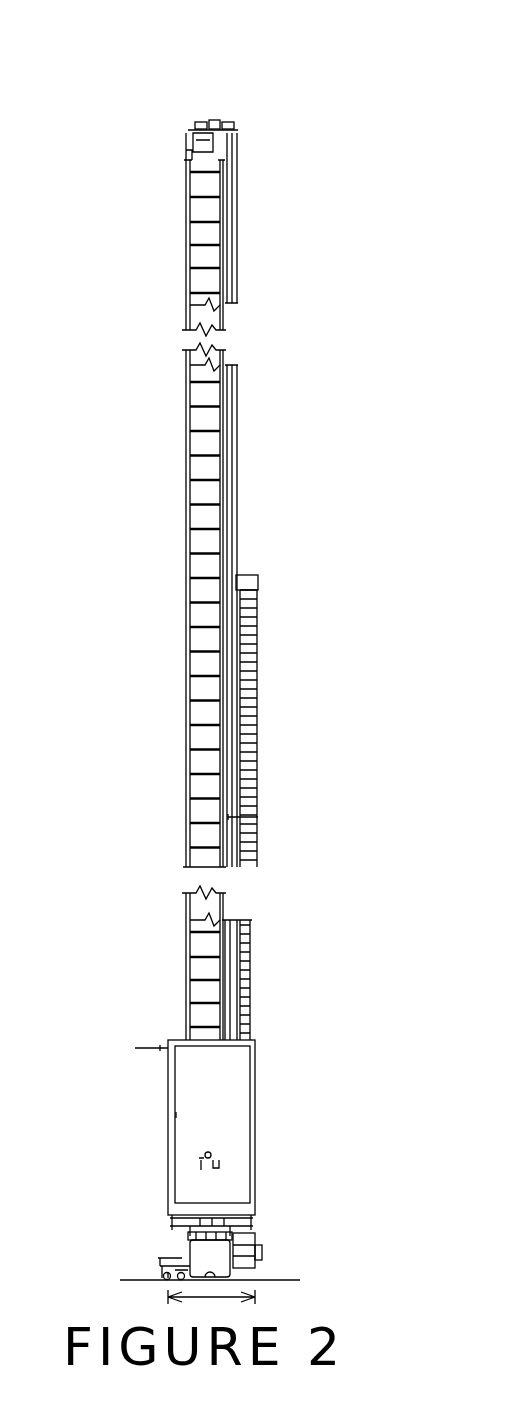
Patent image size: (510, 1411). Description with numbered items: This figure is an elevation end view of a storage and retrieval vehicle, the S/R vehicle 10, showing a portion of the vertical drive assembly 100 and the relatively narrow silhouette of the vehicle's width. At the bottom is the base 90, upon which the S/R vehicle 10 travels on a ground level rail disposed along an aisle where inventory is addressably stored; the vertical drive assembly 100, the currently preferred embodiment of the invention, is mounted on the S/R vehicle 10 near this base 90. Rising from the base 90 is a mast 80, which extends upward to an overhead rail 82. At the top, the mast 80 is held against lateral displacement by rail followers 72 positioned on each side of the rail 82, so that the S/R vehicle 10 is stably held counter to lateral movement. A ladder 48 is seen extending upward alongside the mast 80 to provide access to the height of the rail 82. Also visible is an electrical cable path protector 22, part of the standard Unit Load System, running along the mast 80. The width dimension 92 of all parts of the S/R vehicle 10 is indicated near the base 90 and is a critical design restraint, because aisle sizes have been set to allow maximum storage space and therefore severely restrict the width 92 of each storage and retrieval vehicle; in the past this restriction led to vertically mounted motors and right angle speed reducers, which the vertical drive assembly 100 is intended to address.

The S/R vehicle 10 is at (302, 477).
The electrical cable path protector 22 is at (255, 990).
The ladder 48 is at (186, 274).
The rail followers 72 is at (200, 121).
The mast 80 is at (220, 150).
The rail 82 is at (211, 121).
The base 90 is at (258, 1262).
The width dimension 92 is at (198, 1282).
The vertical drive assembly 100 is at (188, 1230).